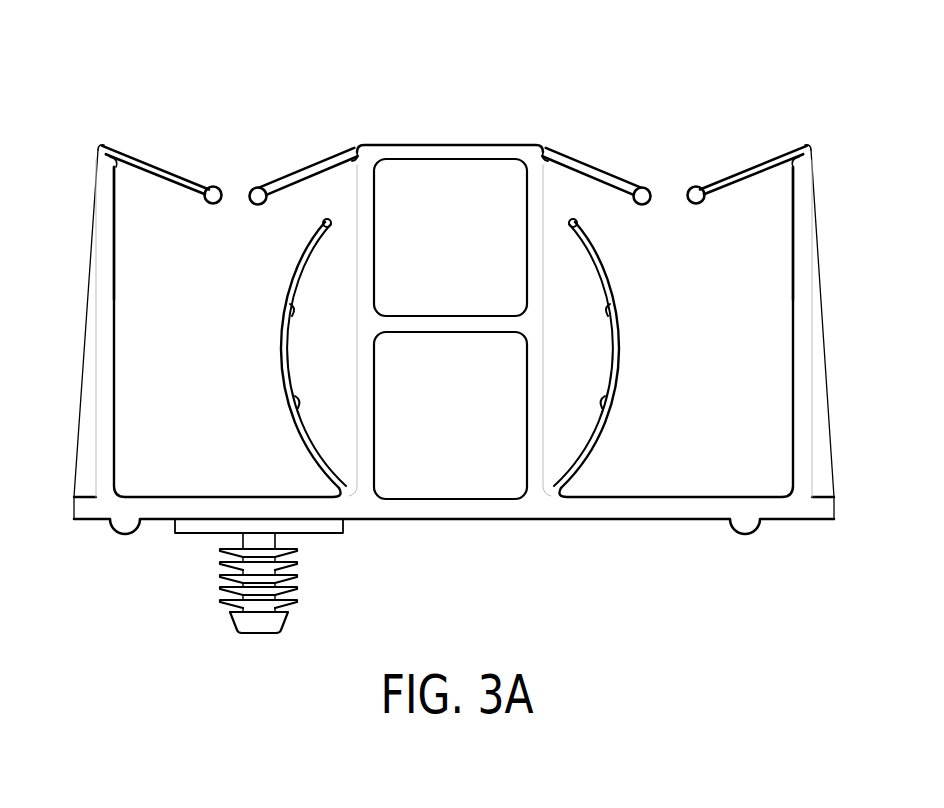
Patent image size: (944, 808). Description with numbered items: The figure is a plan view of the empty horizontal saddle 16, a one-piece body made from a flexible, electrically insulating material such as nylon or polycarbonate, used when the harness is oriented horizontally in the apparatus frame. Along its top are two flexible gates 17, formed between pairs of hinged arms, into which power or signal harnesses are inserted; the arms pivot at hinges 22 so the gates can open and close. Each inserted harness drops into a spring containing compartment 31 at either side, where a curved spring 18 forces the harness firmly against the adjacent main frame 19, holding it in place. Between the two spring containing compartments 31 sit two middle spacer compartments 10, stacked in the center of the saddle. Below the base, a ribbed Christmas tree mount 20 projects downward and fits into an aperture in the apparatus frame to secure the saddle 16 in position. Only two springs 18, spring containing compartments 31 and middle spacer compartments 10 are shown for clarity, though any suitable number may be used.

The horizontal saddle 16 is at (585, 98).
The middle spacer compartment 10 is at (443, 178).
The hinge 22 is at (112, 158).
The flexible gate 17 is at (236, 192).
The spring 18 is at (280, 356).
The main frame 19 is at (105, 397).
The spring containing compartment 31 is at (128, 270).
The Christmas tree mount 20 is at (298, 603).